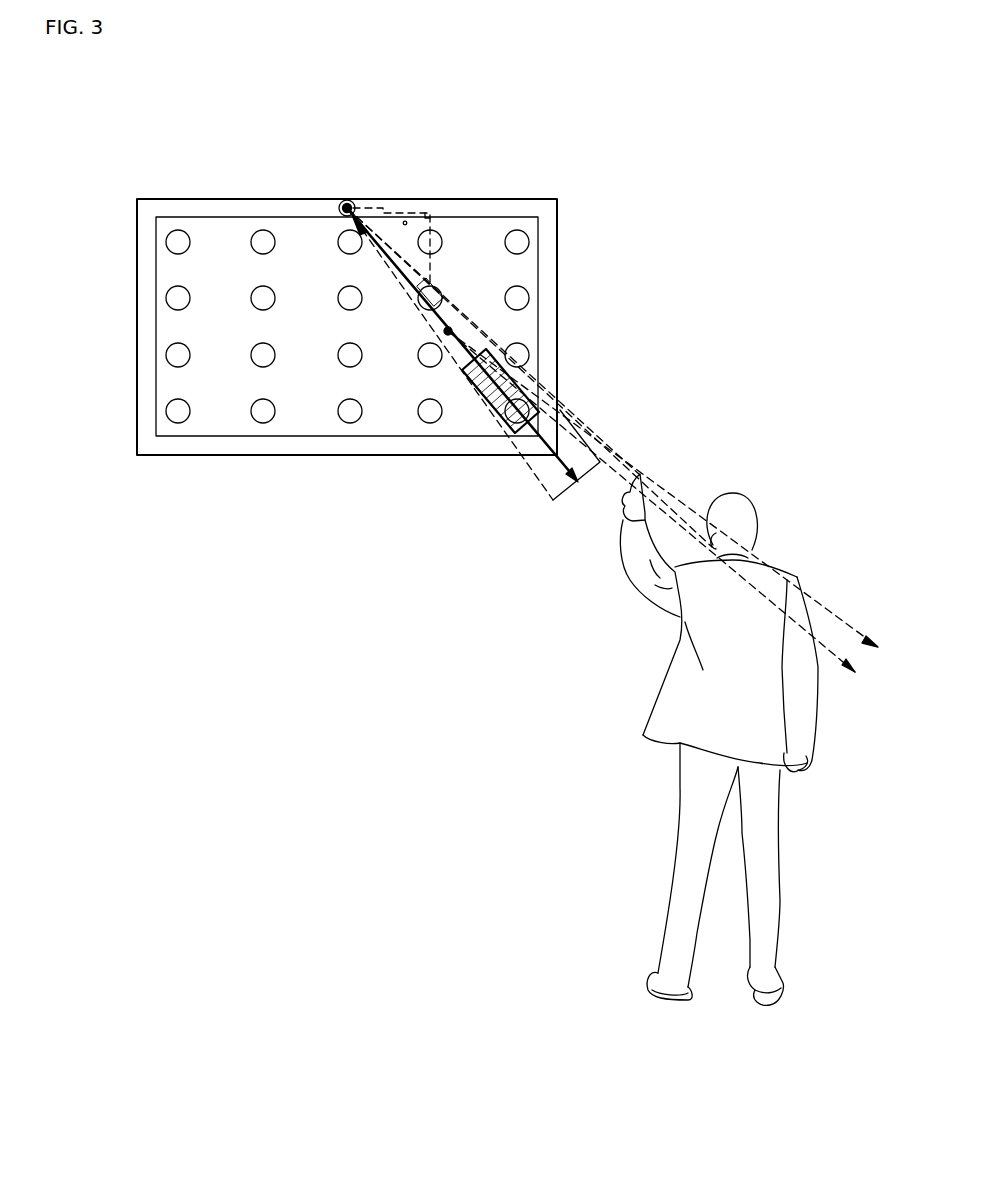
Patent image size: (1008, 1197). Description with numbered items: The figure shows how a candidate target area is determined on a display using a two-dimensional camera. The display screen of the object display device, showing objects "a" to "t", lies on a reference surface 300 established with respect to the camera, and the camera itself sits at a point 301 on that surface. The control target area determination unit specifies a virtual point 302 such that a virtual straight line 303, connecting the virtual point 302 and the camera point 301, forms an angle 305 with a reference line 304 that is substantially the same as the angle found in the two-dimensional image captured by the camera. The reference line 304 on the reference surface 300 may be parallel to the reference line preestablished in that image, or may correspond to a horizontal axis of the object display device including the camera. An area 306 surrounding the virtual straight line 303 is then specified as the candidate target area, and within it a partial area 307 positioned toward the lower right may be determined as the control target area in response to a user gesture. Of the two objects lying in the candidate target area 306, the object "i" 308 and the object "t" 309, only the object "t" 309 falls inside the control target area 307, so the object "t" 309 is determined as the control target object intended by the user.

The reference surface 300 is at (270, 456).
The point where the two-dimensional camera is positioned 301 is at (341, 202).
The virtual point 302 is at (451, 331).
The virtual straight line 303 is at (482, 364).
The reference line 304 is at (407, 208).
The angle 305 is at (420, 224).
The candidate target area 306 is at (432, 305).
The control target area 307 is at (490, 400).
The object "i" 308 is at (445, 293).
The object "t" 309 is at (540, 408).